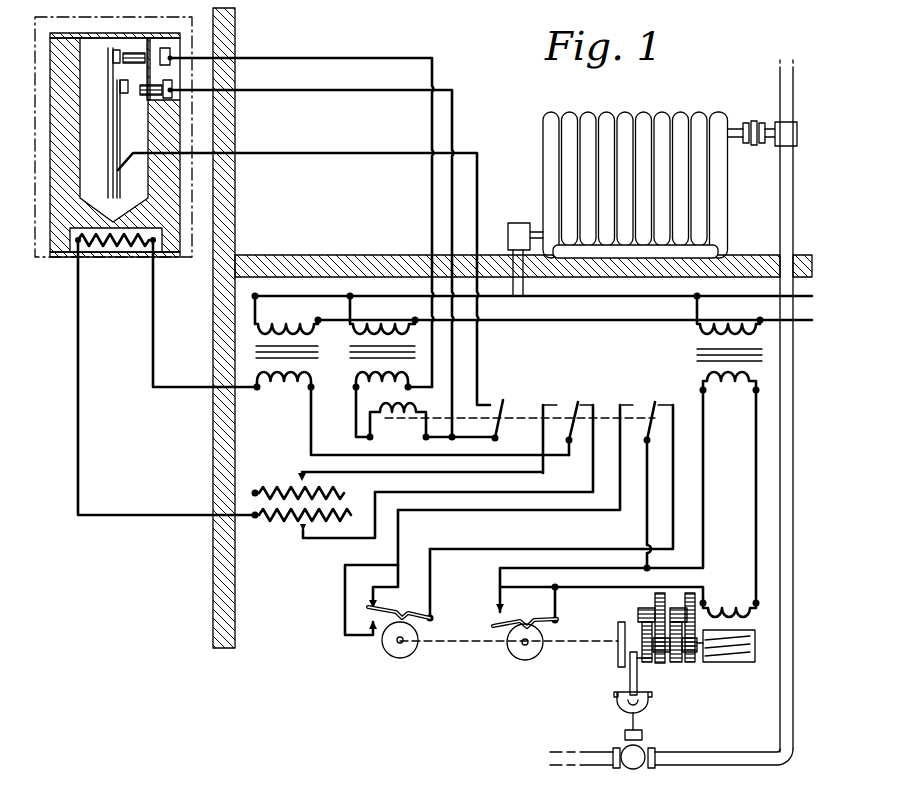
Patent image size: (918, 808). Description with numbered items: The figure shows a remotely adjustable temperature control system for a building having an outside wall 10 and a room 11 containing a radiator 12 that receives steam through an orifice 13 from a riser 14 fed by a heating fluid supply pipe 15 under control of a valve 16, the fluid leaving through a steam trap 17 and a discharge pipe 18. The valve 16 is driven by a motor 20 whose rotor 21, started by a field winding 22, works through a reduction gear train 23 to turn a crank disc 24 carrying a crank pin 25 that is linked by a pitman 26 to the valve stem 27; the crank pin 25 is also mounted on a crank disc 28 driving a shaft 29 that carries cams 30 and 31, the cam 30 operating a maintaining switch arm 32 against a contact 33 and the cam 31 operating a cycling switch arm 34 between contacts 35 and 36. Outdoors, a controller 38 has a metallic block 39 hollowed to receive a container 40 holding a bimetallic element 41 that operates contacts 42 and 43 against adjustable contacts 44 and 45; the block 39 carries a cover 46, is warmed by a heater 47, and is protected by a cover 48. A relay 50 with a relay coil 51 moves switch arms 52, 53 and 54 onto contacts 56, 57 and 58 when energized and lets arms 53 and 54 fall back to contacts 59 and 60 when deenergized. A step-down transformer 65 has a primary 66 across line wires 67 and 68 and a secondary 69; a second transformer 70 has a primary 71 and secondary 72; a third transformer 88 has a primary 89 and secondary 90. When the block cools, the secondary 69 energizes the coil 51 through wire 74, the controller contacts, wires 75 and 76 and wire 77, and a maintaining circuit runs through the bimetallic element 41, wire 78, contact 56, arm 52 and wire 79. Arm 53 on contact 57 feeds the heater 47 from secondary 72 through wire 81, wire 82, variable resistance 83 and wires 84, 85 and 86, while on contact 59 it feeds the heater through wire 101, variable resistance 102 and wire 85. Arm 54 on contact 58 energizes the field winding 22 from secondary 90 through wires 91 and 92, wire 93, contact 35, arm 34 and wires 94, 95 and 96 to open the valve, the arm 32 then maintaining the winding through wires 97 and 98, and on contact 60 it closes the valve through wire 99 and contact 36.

The outside wall 10 is at (222, 428).
The room 11 is at (520, 98).
The radiator 12 is at (543, 152).
The orifice 13 is at (758, 122).
The riser 14 is at (780, 207).
The heating fluid supply pipe 15 is at (590, 753).
The valve 16 is at (622, 752).
The steam trap 17 is at (520, 226).
The discharge pipe 18 is at (513, 256).
The motor 20 is at (593, 668).
The rotor 21 is at (735, 662).
The field winding 22 is at (728, 610).
The reduction gear train 23 is at (680, 665).
The crank disc 24 is at (650, 665).
The crank pin 25 is at (630, 670).
The pitman 26 is at (624, 702).
The valve stem 27 is at (638, 727).
The crank disc 28 is at (621, 622).
The shaft 29 is at (608, 646).
The cam 30 is at (508, 650).
The cam 31 is at (384, 646).
The switch arm 32 is at (510, 622).
The contact 33 is at (496, 610).
The switch arm 34 is at (392, 610).
The contact 35 is at (370, 600).
The contact 36 is at (370, 628).
The outdoor controller 38 is at (58, 264).
The metallic block 39 is at (165, 200).
The container 40 is at (82, 152).
The bimetallic element 41 is at (108, 104).
The contact 42 is at (113, 53).
The contact 43 is at (120, 86).
The contact 44 is at (172, 58).
The contact 45 is at (140, 90).
The cover 46 is at (135, 35).
The heater 47 is at (118, 248).
The cover 48 is at (190, 250).
The relay 50 is at (520, 400).
The relay coil 51 is at (398, 428).
The switch arm 52 is at (498, 425).
The switch arm 53 is at (570, 420).
The switch arm 54 is at (650, 420).
The contact 56 is at (485, 403).
The contact 57 is at (552, 403).
The contact 58 is at (626, 403).
The out contact 59 is at (584, 403).
The contact 60 is at (662, 403).
The step-down transformer 65 is at (348, 350).
The primary 66 is at (382, 325).
The line wire 67 is at (612, 300).
The line wire 68 is at (606, 322).
The secondary 69 is at (384, 378).
The second step-down transformer 70 is at (248, 348).
The primary 71 is at (278, 325).
The secondary 72 is at (286, 385).
The wire 74 is at (432, 208).
The wire 75 is at (452, 128).
The wire 76 is at (452, 428).
The wire 77 is at (356, 420).
The wire 78 is at (477, 182).
The wire 79 is at (477, 428).
The wire 81 is at (311, 432).
The wire 82 is at (484, 458).
The variable resistance 83 is at (294, 488).
The wire 84 is at (255, 493).
The wire 85 is at (78, 460).
The wire 86 is at (150, 362).
The third step-down transformer 88 is at (692, 357).
The primary 89 is at (726, 325).
The secondary 90 is at (730, 388).
The wire 91 is at (703, 472).
The wire 92 is at (647, 520).
The wire 93 is at (520, 549).
The wire 94 is at (430, 582).
The wire 95 is at (594, 588).
The wire 96 is at (756, 500).
The wire 97 is at (500, 580).
The wire 98 is at (555, 606).
The wire 99 is at (673, 525).
The wire 101 is at (593, 483).
The variable resistance 102 is at (292, 522).